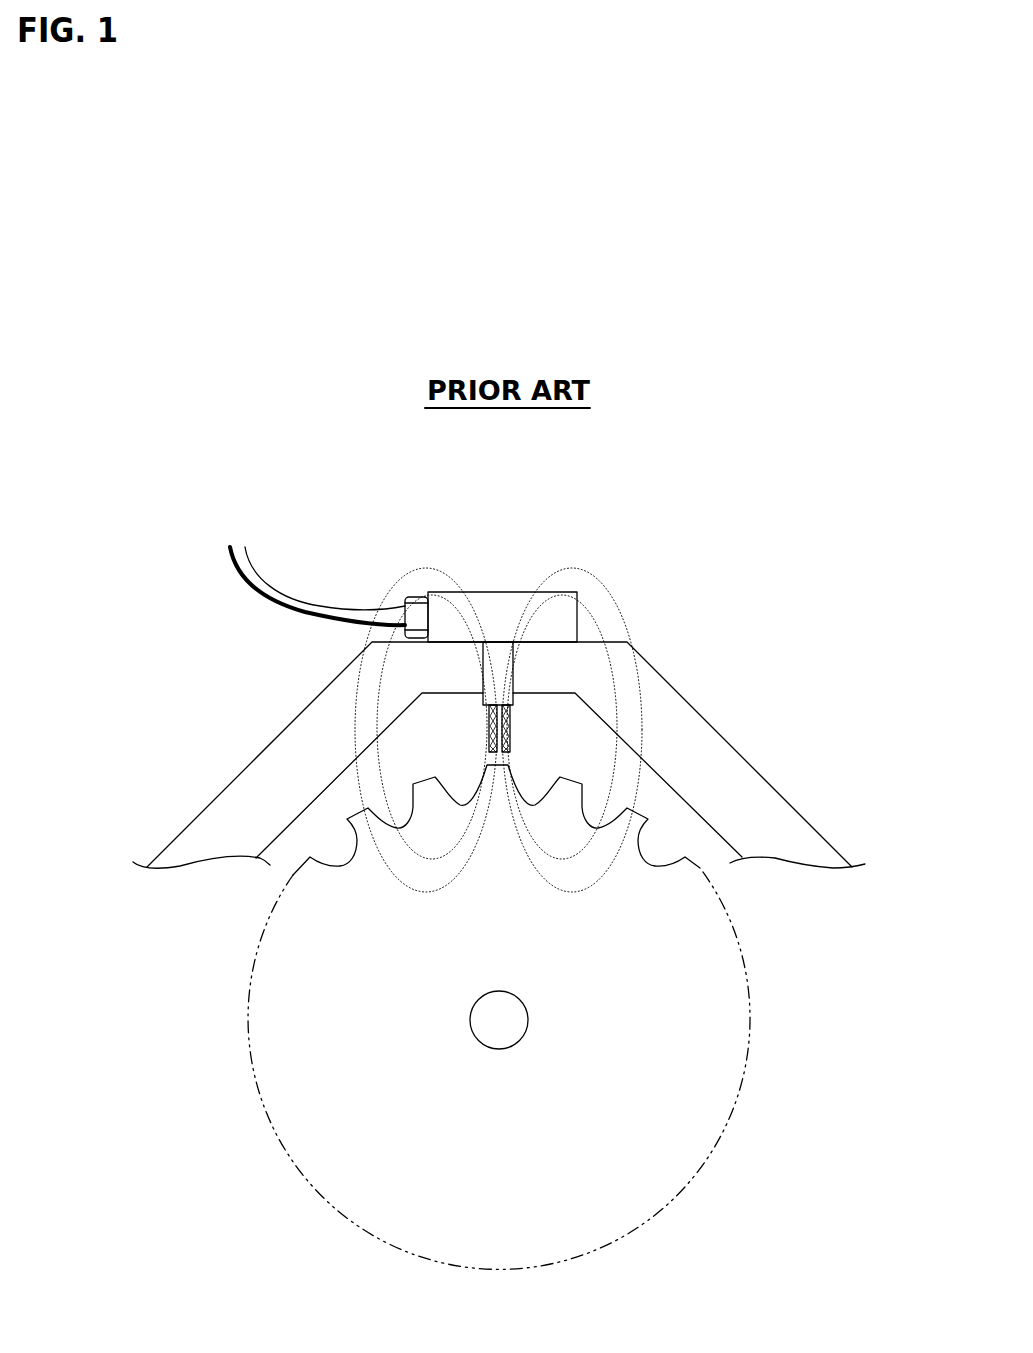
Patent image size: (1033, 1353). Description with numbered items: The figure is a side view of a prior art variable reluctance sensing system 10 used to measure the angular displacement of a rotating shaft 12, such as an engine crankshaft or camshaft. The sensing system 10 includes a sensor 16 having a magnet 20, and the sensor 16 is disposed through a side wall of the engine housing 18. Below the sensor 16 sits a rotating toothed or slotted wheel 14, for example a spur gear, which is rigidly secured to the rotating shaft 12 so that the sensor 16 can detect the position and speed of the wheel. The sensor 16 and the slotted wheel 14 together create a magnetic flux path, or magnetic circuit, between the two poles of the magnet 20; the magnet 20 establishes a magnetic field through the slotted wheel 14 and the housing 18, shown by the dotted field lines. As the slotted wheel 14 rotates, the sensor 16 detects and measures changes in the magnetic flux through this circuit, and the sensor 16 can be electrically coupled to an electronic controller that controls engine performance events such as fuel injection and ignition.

The variable reluctance sensing system 10 is at (273, 493).
The rotating shaft 12 is at (508, 1019).
The slotted wheel 14 is at (380, 882).
The sensor 16 is at (457, 714).
The engine housing 18 is at (697, 753).
The magnet 20 is at (503, 667).